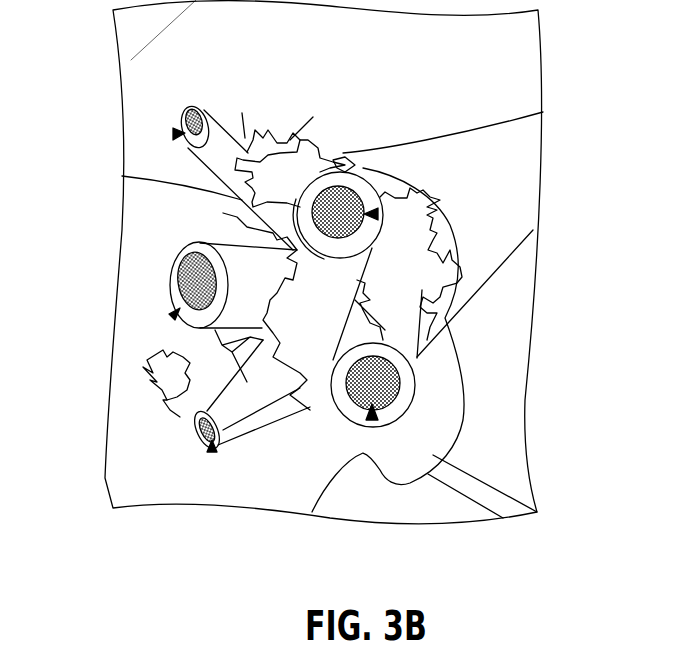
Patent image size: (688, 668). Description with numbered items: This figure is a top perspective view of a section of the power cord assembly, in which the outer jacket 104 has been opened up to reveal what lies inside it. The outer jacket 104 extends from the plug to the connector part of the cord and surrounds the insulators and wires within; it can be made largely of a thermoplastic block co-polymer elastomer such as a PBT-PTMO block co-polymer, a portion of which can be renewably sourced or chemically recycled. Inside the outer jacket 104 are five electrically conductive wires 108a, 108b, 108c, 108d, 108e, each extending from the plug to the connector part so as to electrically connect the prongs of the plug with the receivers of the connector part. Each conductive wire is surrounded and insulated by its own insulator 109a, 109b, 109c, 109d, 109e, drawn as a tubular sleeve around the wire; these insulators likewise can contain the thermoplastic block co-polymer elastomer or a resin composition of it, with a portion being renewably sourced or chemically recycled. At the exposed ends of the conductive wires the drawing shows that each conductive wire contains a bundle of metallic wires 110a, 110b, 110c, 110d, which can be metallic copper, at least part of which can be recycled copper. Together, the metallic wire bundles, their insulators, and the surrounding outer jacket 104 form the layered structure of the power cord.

The outer jacket 104 is at (478, 257).
The electrically conductive wire 108a is at (372, 420).
The electrically conductive wire 108b is at (376, 214).
The electrically conductive wire 108c is at (174, 134).
The electrically conductive wire 108d is at (173, 313).
The electrically conductive wire 108e is at (212, 452).
The insulator 109a is at (407, 388).
The insulator 109b is at (358, 180).
The insulator 109c is at (202, 112).
The insulator 109d is at (172, 290).
The insulator 109e is at (203, 410).
The metallic wires 110a is at (357, 415).
The metallic wires 110b is at (338, 186).
The metallic wires 110c is at (187, 122).
The metallic wires 110d is at (178, 282).